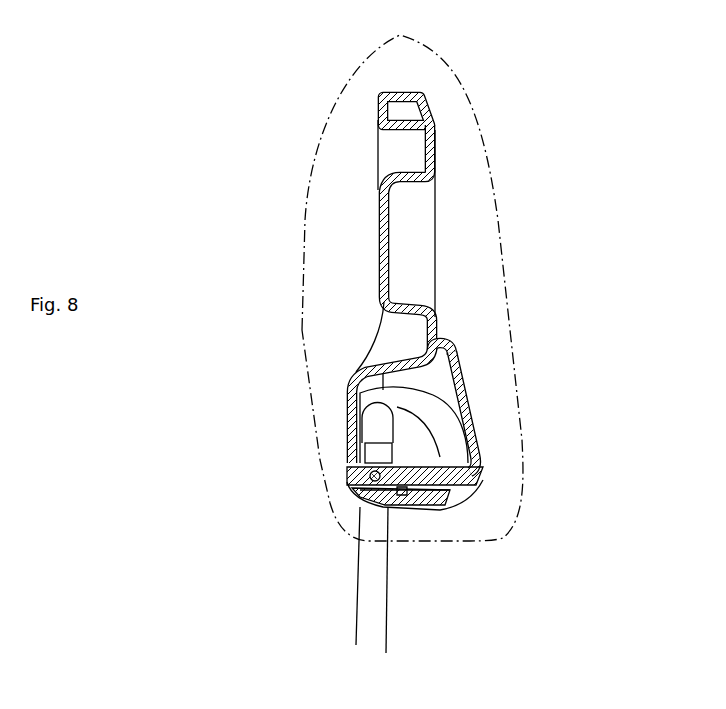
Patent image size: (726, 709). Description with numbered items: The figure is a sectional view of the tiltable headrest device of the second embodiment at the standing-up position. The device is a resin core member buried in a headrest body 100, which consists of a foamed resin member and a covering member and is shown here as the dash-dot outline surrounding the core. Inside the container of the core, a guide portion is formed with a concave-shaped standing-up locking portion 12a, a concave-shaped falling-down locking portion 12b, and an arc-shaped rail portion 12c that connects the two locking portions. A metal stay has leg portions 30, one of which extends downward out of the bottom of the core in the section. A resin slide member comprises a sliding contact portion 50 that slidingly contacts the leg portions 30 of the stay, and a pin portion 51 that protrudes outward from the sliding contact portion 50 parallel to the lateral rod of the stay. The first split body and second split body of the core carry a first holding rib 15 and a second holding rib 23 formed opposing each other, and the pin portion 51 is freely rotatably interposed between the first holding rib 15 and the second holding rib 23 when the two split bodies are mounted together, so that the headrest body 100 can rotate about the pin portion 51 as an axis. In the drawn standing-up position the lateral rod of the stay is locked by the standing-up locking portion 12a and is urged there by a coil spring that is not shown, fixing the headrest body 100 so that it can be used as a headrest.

The headrest body 100 is at (507, 272).
The standing-up locking portion 12a is at (360, 373).
The falling-down locking portion 12b is at (436, 460).
The rail portion 12c is at (417, 427).
The first holding rib 15 is at (360, 487).
The second holding rib 23 is at (472, 427).
The leg portion 30 is at (362, 623).
The sliding contact portion 50 is at (360, 430).
The pin portion 51 is at (387, 503).